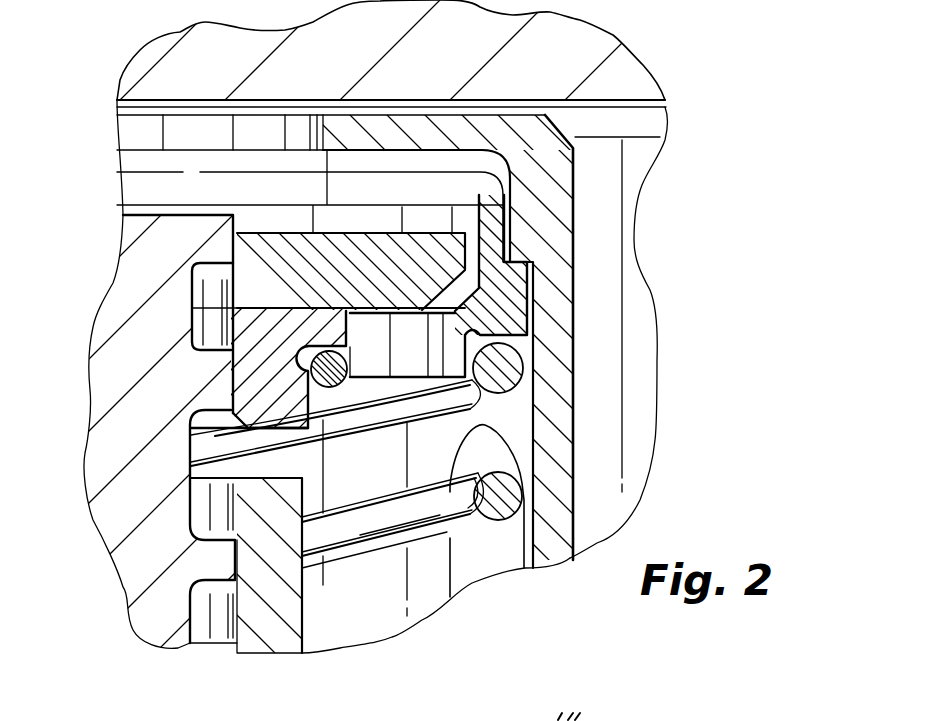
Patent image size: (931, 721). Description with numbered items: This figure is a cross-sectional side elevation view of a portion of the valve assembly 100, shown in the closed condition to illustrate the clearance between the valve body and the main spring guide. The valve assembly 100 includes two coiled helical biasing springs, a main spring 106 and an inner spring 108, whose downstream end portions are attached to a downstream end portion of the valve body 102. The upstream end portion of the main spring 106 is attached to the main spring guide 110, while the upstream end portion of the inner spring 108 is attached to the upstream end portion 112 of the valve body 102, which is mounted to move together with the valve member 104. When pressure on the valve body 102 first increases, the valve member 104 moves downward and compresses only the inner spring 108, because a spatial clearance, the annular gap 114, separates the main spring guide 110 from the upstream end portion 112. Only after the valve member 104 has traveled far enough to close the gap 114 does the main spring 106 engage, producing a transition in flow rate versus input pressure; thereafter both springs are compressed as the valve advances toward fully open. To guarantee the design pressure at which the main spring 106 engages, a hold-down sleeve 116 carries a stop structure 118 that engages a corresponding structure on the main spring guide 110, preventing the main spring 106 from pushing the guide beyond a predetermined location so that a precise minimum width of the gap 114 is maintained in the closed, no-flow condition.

The valve assembly 100 is at (683, 137).
The valve body 102 is at (278, 598).
The valve member 104 is at (125, 297).
The main spring 106 is at (500, 522).
The inner spring 108 is at (330, 392).
The main spring guide 110 is at (503, 304).
The upstream end portion of valve body 112 is at (285, 255).
The annular gap 114 is at (437, 392).
The hold-down sleeve 116 is at (413, 130).
The stop structure 118 is at (508, 258).